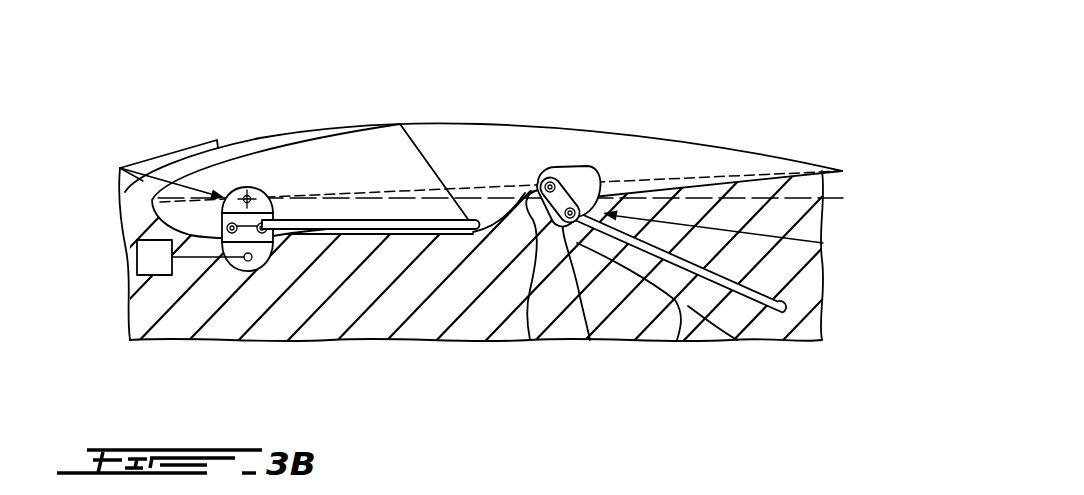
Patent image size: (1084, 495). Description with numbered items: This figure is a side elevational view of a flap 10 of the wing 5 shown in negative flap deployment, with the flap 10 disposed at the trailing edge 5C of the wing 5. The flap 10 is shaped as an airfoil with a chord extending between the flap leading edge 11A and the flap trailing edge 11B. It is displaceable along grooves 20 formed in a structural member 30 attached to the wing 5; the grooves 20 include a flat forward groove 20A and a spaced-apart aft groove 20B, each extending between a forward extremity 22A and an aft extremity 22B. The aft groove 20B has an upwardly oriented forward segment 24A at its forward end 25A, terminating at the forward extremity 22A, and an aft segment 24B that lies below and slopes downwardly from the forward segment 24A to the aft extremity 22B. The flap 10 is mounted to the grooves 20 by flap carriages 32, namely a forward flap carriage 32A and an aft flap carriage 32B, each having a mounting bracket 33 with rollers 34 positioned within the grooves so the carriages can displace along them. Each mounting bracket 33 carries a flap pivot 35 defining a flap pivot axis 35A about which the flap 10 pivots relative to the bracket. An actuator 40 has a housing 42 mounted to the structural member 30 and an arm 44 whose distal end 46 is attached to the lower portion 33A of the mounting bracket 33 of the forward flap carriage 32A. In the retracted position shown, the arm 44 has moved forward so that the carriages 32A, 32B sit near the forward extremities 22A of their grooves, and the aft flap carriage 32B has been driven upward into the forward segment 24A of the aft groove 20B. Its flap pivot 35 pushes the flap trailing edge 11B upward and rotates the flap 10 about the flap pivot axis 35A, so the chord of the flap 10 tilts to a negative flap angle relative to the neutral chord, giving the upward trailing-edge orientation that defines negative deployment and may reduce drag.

The wing 5 is at (151, 112).
The trailing edge of the wing 5C is at (187, 124).
The flap 10 is at (461, 128).
The flap leading edge 11A is at (147, 205).
The flap trailing edge 11B is at (851, 157).
The grooves 20 is at (584, 318).
The forward groove 20A is at (577, 323).
The aft groove 20B is at (775, 279).
The forward extremity 22A is at (437, 202).
The aft extremity 22B is at (474, 231).
The forward segment 24A is at (516, 222).
The aft segment 24B is at (677, 340).
The forward end of the aft groove 25A is at (514, 147).
The structural member 30 is at (509, 317).
The flap carriages 32 is at (474, 203).
The forward flap carriage 32A is at (120, 168).
The aft flap carriage 32B is at (823, 243).
The mounting bracket 33 is at (253, 198).
The lower portion 33A is at (273, 246).
The rollers 34 is at (270, 214).
The flap pivot 35 is at (246, 195).
The flap pivot axis 35A is at (256, 190).
The actuator 40 is at (129, 317).
The housing 42 is at (137, 258).
The arm 44 is at (190, 297).
The distal end 46 is at (248, 262).